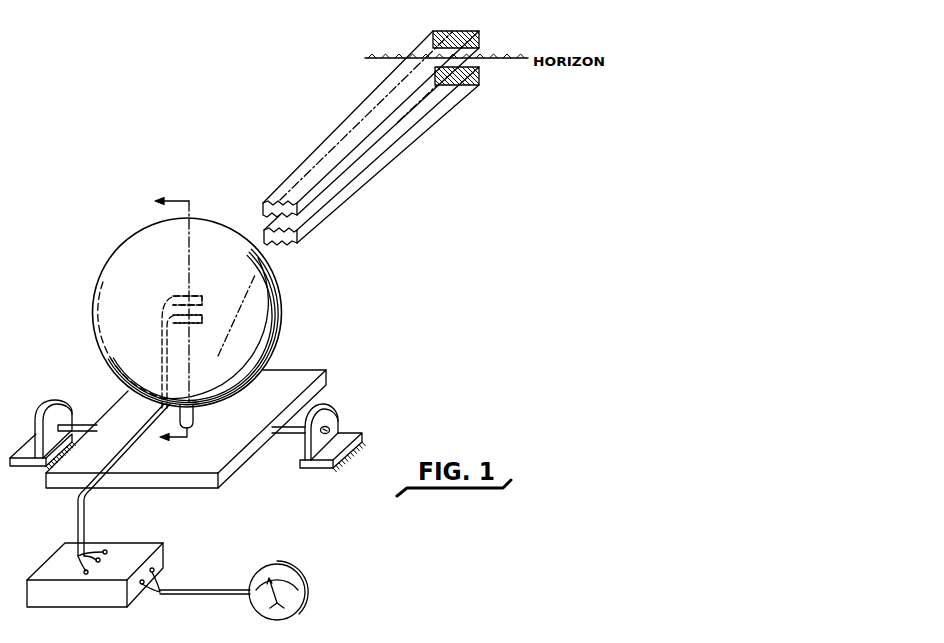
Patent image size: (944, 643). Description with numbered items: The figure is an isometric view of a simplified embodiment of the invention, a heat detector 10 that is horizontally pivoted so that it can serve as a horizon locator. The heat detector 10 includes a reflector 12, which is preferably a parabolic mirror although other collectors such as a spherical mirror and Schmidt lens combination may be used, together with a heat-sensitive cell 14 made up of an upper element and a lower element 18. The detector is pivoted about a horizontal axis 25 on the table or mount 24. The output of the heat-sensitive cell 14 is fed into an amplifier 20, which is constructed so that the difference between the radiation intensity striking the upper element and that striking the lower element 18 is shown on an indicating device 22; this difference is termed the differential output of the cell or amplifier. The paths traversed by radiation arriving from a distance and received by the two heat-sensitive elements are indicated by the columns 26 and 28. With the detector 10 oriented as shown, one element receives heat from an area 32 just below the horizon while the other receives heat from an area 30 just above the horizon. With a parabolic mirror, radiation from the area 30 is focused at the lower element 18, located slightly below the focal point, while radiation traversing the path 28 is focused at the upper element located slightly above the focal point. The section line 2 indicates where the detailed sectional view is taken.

The section line 2- 2 is at (172, 310).
The heat detector 10 is at (321, 305).
The reflector 12 is at (278, 340).
The heat-sensitive cell 14 is at (166, 306).
The lower element 18 is at (189, 320).
The amplifier 20 is at (123, 543).
The indicating device 22 is at (302, 575).
The table or mount 24 is at (226, 477).
The horizontal axis 25 is at (334, 415).
The column 26 is at (322, 155).
The column 28 is at (358, 180).
The area just above the horizon 30 is at (431, 51).
The area just below the horizon 32 is at (480, 82).